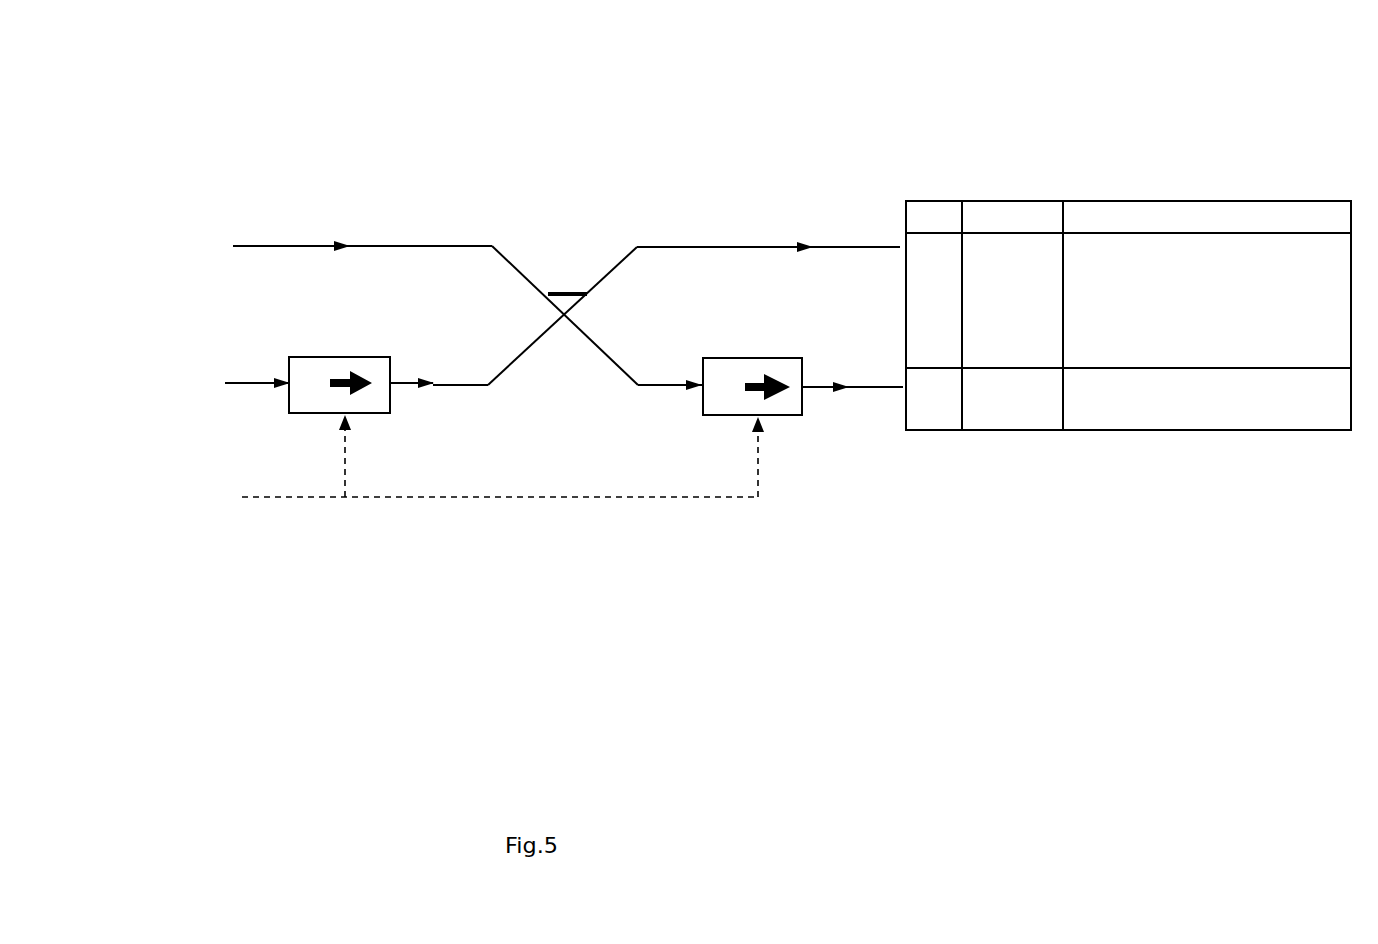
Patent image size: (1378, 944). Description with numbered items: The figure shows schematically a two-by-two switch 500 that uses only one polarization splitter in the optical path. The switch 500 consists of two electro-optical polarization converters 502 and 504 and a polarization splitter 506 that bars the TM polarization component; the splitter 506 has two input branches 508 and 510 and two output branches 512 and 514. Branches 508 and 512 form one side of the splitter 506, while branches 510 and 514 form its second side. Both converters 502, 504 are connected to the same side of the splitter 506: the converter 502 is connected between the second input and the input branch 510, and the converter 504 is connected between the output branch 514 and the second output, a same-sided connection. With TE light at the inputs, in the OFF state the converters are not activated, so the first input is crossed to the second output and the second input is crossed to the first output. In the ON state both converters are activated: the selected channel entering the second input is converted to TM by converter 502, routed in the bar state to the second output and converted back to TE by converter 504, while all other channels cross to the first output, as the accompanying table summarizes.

The switch 500 is at (731, 410).
The electro-optical polarization converter 502 is at (392, 434).
The electro-optical polarization converter 504 is at (710, 434).
The polarization splitter 506 is at (565, 232).
The input branch 508 is at (538, 302).
The input branch 510 is at (513, 333).
The output branch 512 is at (768, 234).
The output branch 514 is at (770, 400).